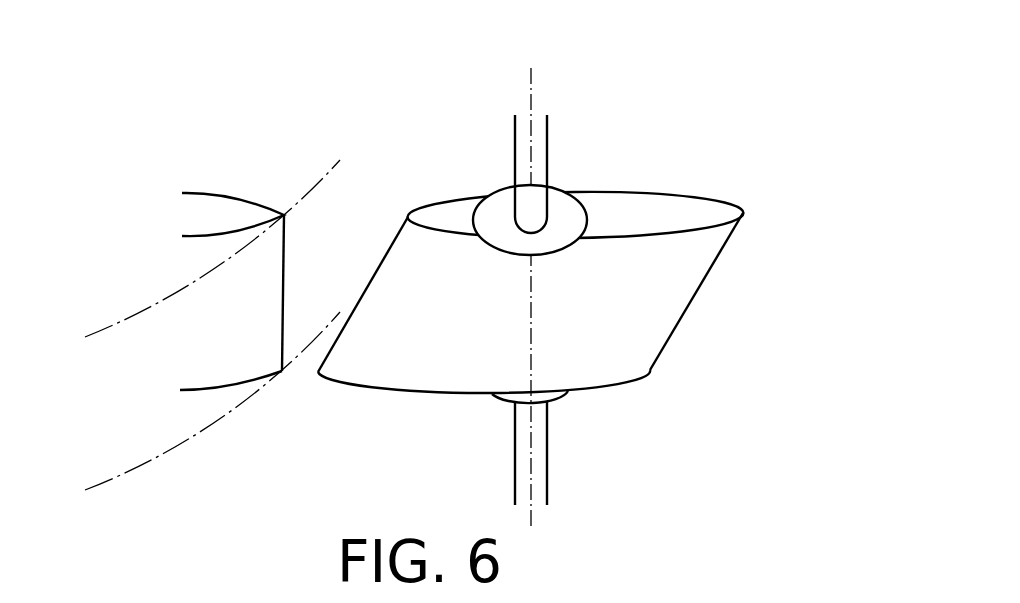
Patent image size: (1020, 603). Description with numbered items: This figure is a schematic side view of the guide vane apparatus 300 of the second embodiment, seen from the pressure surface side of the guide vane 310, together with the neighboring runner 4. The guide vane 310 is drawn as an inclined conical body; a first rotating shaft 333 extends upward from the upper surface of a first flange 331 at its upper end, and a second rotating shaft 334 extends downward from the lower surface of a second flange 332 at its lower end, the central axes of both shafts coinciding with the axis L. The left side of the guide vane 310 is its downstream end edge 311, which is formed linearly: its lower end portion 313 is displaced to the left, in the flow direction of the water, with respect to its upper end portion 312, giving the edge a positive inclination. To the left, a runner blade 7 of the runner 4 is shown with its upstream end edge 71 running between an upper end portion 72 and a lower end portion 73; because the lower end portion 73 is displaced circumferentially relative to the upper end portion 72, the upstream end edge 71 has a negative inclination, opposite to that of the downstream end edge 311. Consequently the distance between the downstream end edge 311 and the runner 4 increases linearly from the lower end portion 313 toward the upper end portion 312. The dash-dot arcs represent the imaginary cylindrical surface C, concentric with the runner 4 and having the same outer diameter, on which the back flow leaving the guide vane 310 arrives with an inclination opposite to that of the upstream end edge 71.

The runner 4 is at (257, 278).
The runner blade 7 is at (257, 294).
The upstream end edge 71 is at (289, 320).
The upper end portion 72 is at (284, 213).
The lower end portion 73 is at (284, 376).
The guide vane apparatus 300 is at (564, 307).
The guide vane 310 is at (531, 295).
The downstream end edge 311 is at (382, 255).
The upper end portion 312 is at (408, 214).
The lower end portion 313 is at (320, 376).
The first flange 331 is at (584, 206).
The second flange 332 is at (503, 402).
The first rotating shaft 333 is at (548, 150).
The second rotating shaft 334 is at (548, 465).
The axis L is at (531, 78).
The imaginary cylindrical surface C is at (140, 305).